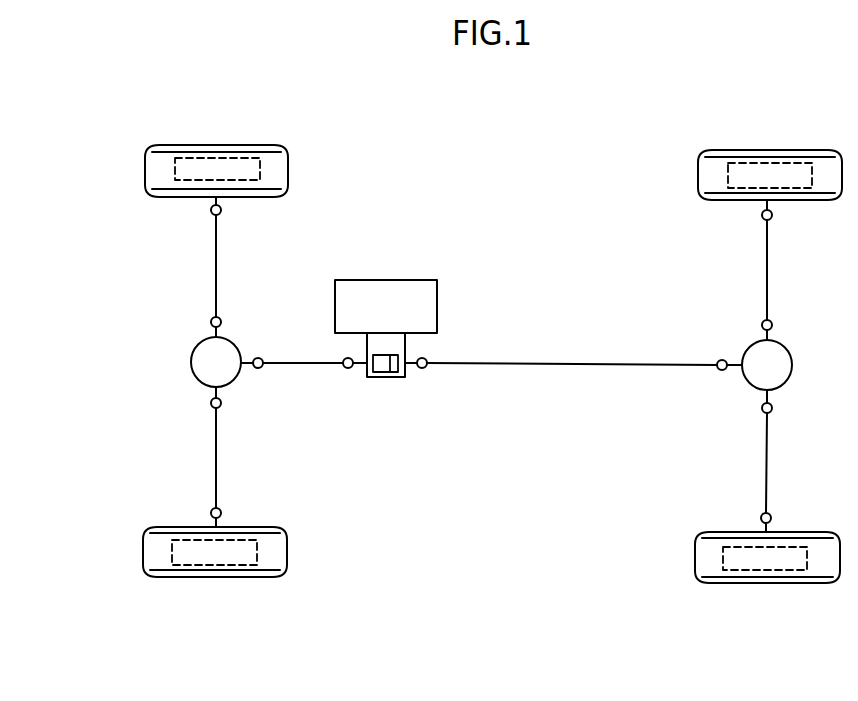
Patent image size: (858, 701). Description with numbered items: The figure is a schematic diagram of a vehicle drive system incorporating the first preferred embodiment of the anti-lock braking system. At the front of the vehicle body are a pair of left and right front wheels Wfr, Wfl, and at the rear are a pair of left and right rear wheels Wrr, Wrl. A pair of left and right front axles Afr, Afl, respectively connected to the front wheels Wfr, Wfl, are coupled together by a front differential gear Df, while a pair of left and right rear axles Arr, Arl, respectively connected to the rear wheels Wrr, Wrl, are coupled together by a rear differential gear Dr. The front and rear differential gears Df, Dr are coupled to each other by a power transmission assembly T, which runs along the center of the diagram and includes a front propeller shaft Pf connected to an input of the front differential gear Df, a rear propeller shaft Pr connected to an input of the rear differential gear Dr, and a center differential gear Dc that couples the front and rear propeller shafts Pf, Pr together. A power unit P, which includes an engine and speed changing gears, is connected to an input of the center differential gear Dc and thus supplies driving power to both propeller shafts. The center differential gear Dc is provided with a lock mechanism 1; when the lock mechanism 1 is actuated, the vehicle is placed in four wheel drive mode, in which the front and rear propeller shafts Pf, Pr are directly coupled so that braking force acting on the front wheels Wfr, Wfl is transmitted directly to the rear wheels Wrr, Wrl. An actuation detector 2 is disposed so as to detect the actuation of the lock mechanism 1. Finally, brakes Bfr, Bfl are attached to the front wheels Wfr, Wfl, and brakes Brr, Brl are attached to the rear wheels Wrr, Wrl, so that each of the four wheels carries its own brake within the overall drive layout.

The right front wheel Wfr is at (170, 150).
The brake Bfr is at (240, 158).
The right front axle Afr is at (216, 282).
The front differential gear Df is at (196, 378).
The left front axle Afl is at (216, 487).
The left front wheel Wfl is at (172, 578).
The brake Bfl is at (246, 565).
The front propeller shaft Pf is at (301, 365).
The power unit P is at (394, 318).
The center differential gear Dc is at (369, 378).
The lock mechanism 1 is at (383, 370).
The actuation detector 2 is at (396, 372).
The rear propeller shaft Pr is at (602, 366).
The power transmission assembly T is at (440, 402).
The right rear wheel Wrr is at (727, 154).
The brake Brr is at (795, 165).
The right rear axle Arr is at (767, 262).
The rear differential gear Dr is at (782, 348).
The left rear axle Arl is at (767, 452).
The left rear wheel Wrl is at (733, 584).
The brake Brl is at (792, 578).